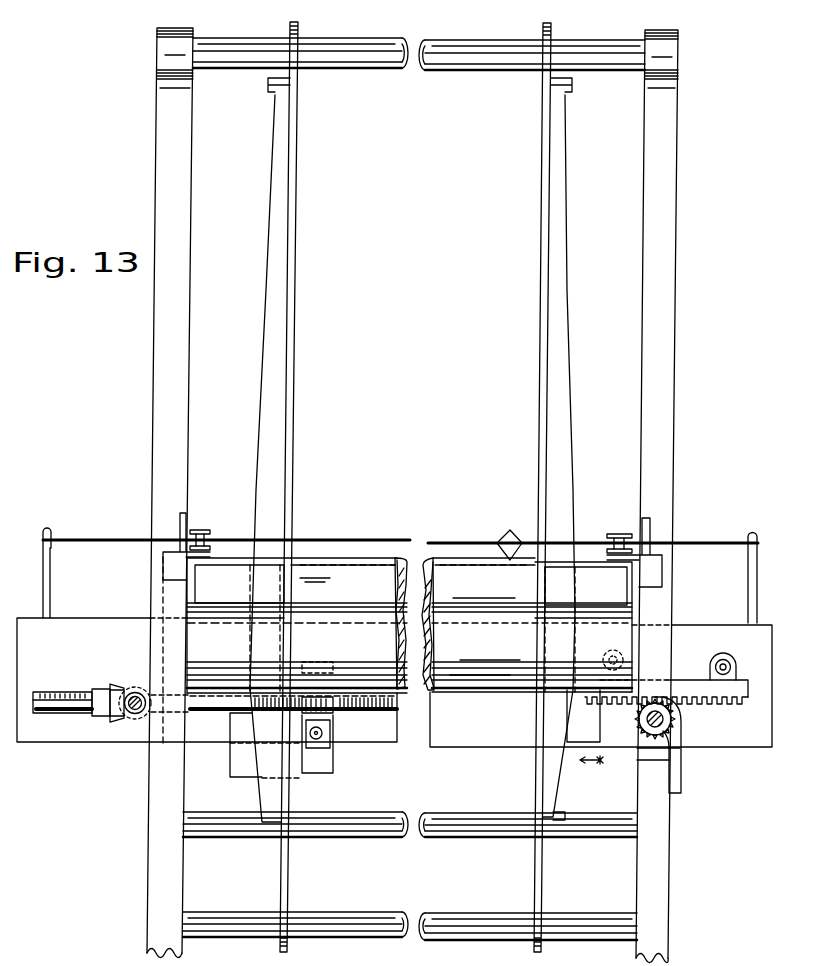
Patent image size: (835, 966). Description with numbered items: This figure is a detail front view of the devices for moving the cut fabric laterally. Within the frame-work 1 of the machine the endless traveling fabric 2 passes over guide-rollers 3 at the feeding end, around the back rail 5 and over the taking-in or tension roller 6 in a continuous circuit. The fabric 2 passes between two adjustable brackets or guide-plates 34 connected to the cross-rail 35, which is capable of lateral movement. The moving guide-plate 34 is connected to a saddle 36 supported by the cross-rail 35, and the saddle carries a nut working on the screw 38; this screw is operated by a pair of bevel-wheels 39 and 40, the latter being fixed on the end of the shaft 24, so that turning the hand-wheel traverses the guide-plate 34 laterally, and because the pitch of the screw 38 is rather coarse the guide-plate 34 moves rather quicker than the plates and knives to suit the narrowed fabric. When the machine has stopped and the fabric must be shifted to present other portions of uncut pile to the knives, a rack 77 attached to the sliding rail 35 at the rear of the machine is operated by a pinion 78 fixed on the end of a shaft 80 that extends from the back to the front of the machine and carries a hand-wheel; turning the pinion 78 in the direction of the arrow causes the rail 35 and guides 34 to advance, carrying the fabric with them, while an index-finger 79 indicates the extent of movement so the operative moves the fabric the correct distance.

The frame-work 1 is at (412, 495).
The endless traveling fabric 2 is at (407, 558).
The guide-rollers 3 is at (363, 42).
The back rail 5 is at (218, 560).
The taking-in or tension roller 6 is at (233, 648).
The shaft 24 is at (134, 707).
The bracket or guide-plate 34 is at (412, 458).
The cross-rail 35 is at (762, 752).
The saddle 36 is at (298, 775).
The screw 38 is at (62, 710).
The bevel-wheel 39 is at (115, 690).
The bevel-wheel 40 is at (137, 691).
The rack 77 is at (703, 688).
The pinion 78 is at (640, 719).
The index-finger 79 is at (400, 565).
The shaft 80 is at (682, 721).